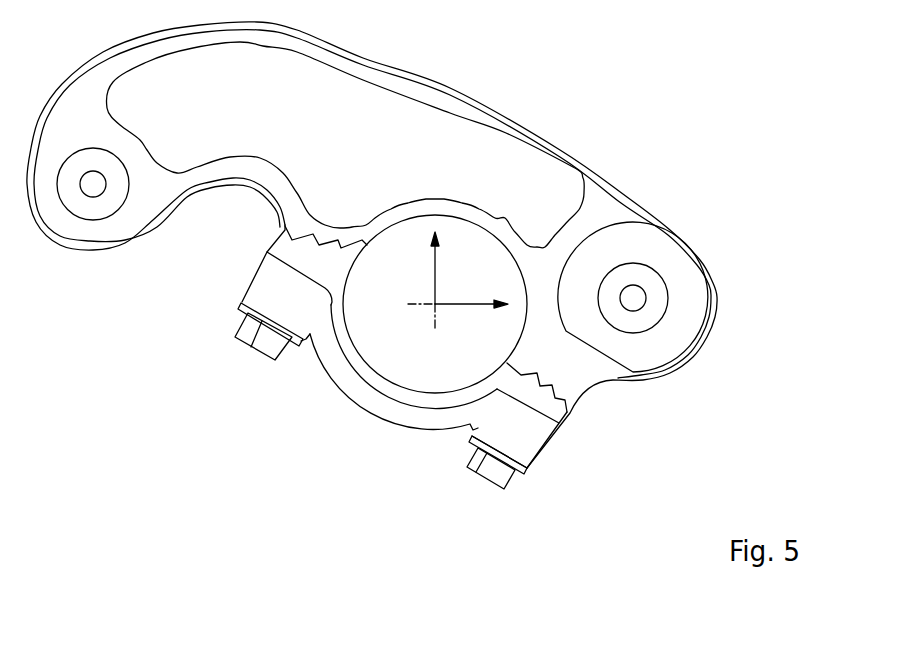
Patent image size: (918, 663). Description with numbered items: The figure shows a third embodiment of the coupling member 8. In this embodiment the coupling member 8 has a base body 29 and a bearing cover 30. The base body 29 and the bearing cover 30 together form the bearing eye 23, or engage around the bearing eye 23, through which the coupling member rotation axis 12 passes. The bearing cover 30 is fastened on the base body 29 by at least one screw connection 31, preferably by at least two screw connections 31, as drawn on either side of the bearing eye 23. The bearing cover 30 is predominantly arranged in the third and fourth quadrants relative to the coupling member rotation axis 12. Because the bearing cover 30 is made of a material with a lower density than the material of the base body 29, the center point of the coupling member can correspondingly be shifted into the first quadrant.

The coupling member 8 is at (380, 245).
The coupling member rotation axis 12 is at (435, 304).
The bearing eye 23 is at (427, 357).
The base body 29 is at (513, 133).
The bearing cover 30 is at (395, 401).
The screw connection 31 is at (250, 335).